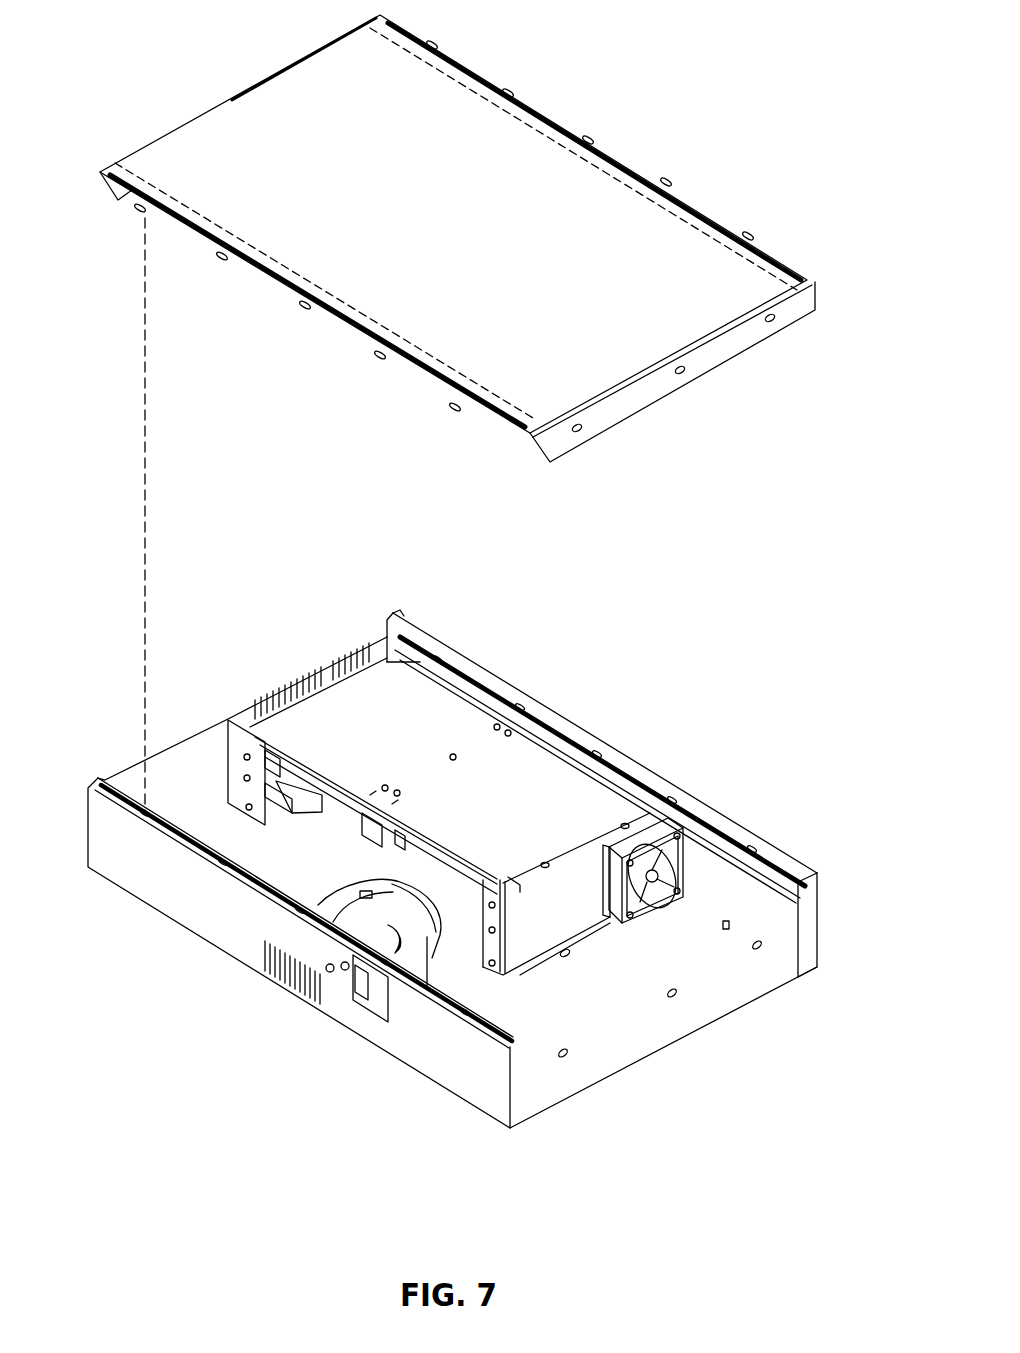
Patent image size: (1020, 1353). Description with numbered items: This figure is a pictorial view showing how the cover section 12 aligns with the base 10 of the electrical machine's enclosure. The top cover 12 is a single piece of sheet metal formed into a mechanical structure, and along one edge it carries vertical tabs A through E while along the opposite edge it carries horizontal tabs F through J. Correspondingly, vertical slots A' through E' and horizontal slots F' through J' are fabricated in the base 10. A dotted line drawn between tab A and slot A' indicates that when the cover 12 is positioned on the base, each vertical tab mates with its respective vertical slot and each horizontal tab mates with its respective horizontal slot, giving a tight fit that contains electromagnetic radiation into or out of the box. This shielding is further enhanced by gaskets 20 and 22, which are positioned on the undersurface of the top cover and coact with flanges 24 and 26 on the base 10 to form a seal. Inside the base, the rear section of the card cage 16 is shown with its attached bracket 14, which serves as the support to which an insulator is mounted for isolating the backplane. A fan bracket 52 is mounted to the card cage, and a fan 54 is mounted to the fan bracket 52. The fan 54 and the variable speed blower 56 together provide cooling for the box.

The base 10 is at (690, 1040).
The cover section 12 is at (814, 276).
The bracket 14 is at (352, 781).
The card cage 16 is at (510, 803).
The gasket 20 is at (538, 420).
The gasket 22 is at (760, 270).
The flange 24 is at (270, 876).
The flange 26 is at (560, 766).
The fan bracket 52 is at (546, 926).
The fan 54 is at (656, 906).
The variable speed blower 56 is at (433, 965).